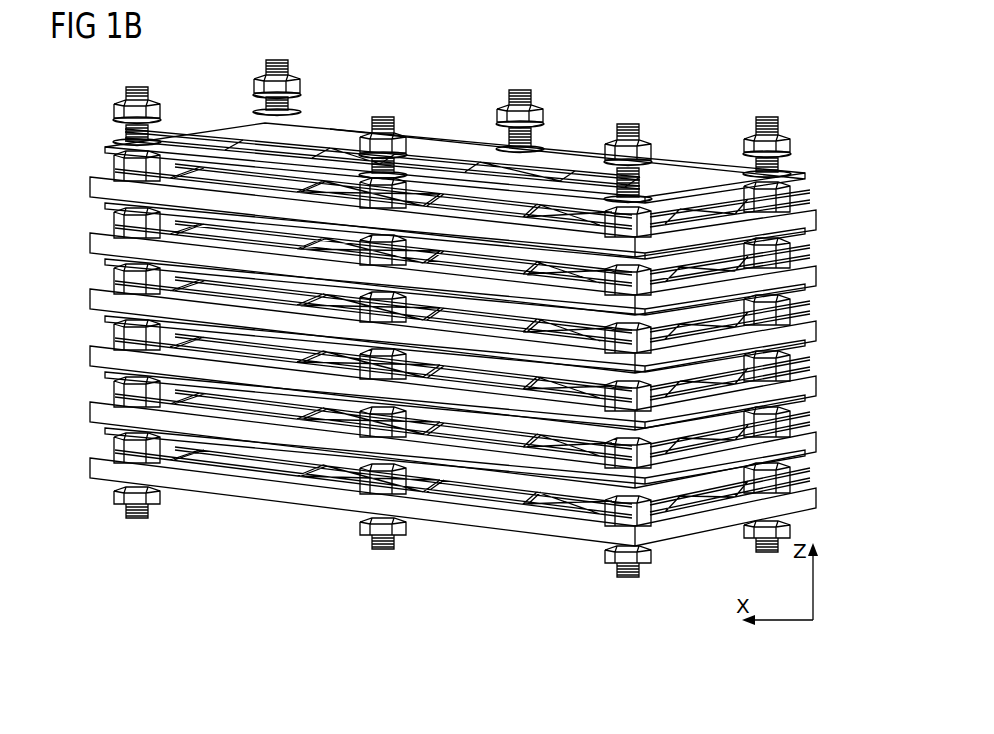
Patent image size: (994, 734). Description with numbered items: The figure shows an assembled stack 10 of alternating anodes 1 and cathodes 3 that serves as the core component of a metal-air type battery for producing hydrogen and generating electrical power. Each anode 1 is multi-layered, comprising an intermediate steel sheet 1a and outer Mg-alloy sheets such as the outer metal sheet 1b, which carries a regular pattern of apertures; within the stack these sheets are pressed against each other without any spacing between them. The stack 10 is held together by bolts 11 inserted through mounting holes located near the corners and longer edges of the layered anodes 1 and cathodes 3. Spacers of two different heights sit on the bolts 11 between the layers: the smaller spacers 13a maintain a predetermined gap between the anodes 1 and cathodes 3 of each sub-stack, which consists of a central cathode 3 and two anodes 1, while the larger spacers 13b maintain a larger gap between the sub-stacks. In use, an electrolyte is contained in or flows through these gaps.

The anode 1 is at (107, 209).
The intermediate metal sheet 1a is at (250, 149).
The outer metal sheet 1b is at (191, 131).
The cathode 3 is at (92, 190).
The stack 10 is at (703, 113).
The bolt 11 is at (538, 101).
The smaller spacer 13a is at (118, 142).
The larger spacer 13b is at (114, 172).